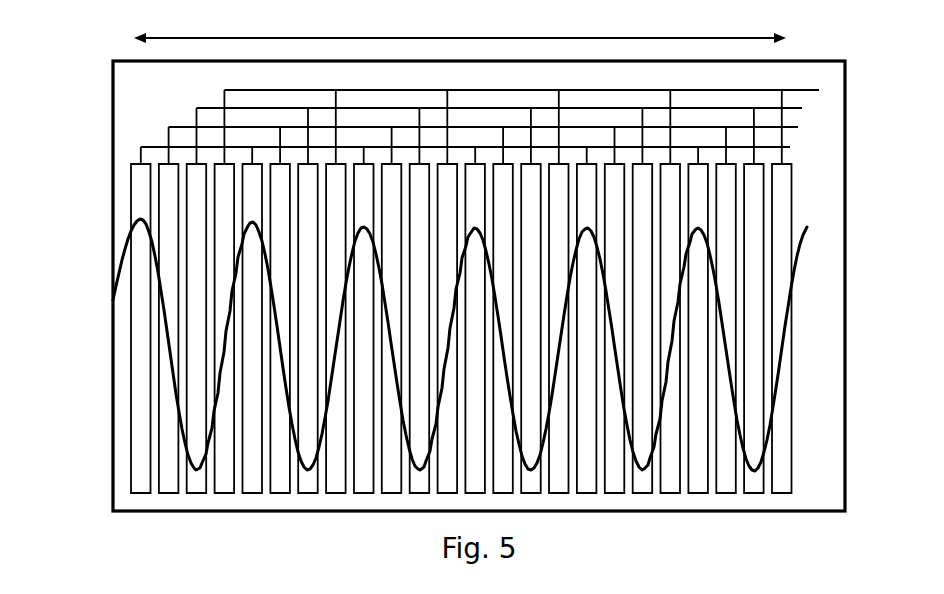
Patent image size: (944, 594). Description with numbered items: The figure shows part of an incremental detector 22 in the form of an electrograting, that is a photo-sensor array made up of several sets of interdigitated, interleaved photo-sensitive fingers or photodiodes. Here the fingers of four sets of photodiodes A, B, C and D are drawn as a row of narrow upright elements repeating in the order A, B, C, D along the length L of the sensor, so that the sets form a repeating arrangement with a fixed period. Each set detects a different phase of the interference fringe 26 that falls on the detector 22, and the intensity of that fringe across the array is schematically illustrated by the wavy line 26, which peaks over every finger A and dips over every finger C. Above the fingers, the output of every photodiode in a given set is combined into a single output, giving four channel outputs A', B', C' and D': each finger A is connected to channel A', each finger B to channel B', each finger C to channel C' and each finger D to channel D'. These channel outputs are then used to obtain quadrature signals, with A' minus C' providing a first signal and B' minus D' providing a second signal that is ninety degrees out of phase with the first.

The incremental detector 22 is at (89, 208).
The interference fringe 26 is at (805, 245).
The length of the sensor L is at (460, 28).
The photodiode of set A is at (419, 320).
The photodiode of set B is at (447, 310).
The photodiode of set C is at (475, 300).
The photodiode of set D is at (503, 291).
The channel output A' is at (480, 157).
The channel output B' is at (501, 135).
The channel output C' is at (515, 114).
The channel output D' is at (541, 95).